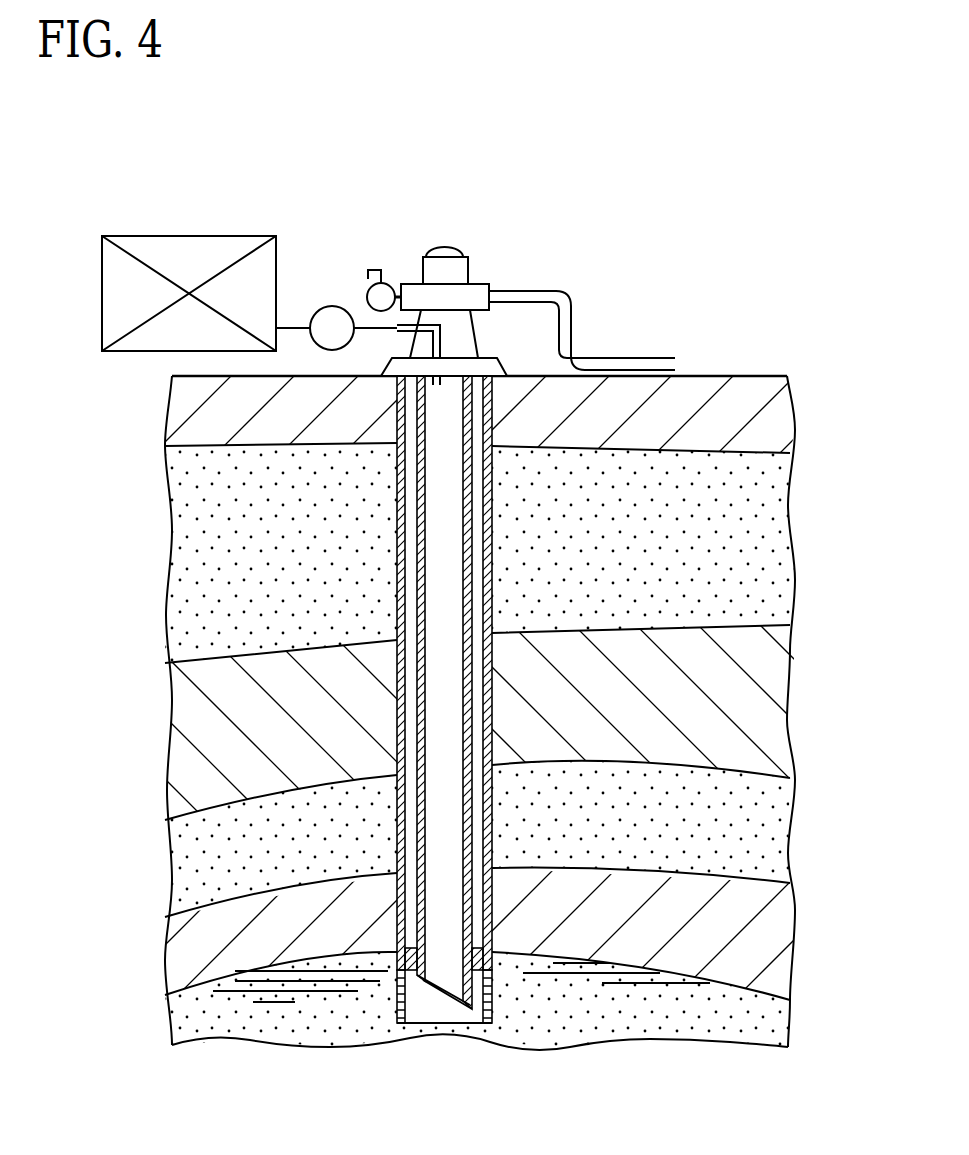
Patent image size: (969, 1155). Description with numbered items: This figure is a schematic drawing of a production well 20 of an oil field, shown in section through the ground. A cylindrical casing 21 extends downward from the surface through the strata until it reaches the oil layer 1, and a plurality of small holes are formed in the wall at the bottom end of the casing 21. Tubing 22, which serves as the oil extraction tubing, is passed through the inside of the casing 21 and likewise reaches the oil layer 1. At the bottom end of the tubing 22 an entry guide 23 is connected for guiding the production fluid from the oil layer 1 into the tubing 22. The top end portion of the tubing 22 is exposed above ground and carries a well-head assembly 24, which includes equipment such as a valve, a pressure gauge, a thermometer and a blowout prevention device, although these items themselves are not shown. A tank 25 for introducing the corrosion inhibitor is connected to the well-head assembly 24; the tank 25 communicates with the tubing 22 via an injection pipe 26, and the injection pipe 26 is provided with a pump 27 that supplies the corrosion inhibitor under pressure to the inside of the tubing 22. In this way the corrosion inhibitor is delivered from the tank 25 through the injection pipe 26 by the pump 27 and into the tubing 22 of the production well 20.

The oil layer 1 is at (723, 1012).
The production well 20 is at (645, 226).
The casing 21 is at (493, 498).
The tubing 22 is at (468, 563).
The entry guide 23 is at (448, 995).
The well-head assembly 24 is at (470, 295).
The tank 25 is at (189, 236).
The injection pipe 26 is at (438, 343).
The pump 27 is at (333, 306).